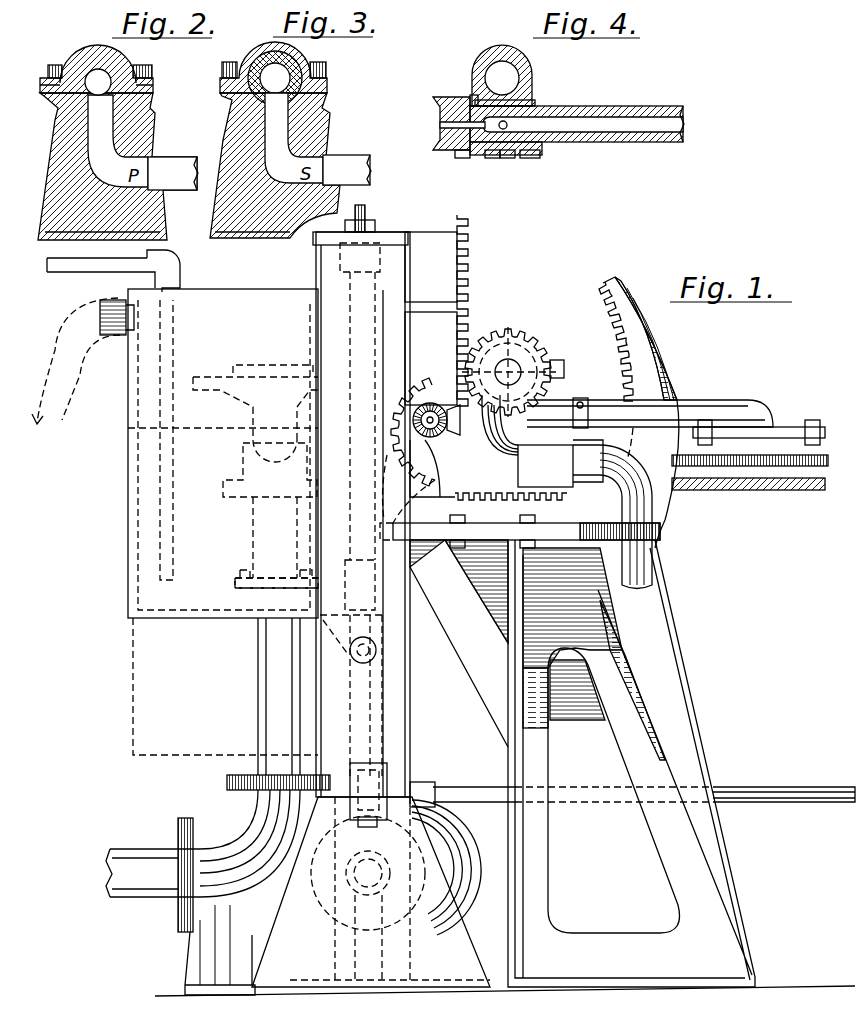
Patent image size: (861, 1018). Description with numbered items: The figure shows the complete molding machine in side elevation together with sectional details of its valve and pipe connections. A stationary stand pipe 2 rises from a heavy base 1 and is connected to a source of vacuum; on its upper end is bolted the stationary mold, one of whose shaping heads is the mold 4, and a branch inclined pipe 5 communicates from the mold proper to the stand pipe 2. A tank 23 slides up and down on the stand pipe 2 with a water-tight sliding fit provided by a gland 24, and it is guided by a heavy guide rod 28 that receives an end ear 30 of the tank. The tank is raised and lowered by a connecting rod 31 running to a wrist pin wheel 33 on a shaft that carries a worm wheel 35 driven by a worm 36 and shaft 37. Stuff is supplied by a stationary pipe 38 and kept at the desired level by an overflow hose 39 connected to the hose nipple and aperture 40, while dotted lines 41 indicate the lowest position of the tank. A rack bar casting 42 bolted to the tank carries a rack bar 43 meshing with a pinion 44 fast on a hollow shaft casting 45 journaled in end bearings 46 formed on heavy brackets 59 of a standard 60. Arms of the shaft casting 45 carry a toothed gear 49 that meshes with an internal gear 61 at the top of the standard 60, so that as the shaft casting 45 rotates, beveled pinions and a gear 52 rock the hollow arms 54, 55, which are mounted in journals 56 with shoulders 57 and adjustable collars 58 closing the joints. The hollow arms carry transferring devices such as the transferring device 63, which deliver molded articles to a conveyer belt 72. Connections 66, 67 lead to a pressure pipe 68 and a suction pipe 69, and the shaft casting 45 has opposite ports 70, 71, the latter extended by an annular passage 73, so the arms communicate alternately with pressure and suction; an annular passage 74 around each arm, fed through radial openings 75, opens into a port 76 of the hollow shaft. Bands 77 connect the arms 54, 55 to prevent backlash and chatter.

In FIG. 1, the base 1 is at (210, 962).
In FIG. 1, the stand pipe 2 is at (268, 672).
In FIG. 1, the mold 4 is at (232, 380).
In FIG. 1, the branch inclined pipe 5 is at (270, 432).
In FIG. 1, the tank 23 is at (128, 592).
In FIG. 1, the gland 24 is at (245, 598).
In FIG. 1, the guide rod 28 is at (355, 553).
In FIG. 1, the end ear 30 is at (372, 598).
In FIG. 1, the connecting rod 31 is at (385, 690).
In FIG. 1, the wrist pin wheel 33 is at (437, 858).
In FIG. 1, the worm wheel 35 is at (413, 907).
In FIG. 1, the worm 36 is at (373, 778).
In FIG. 1, the shaft 37 is at (790, 803).
In FIG. 1, the stationary pipe 38 is at (160, 475).
In FIG. 1, the overflow hose 39 is at (65, 393).
In FIG. 1, the hose nipple and aperture 40 is at (118, 318).
In FIG. 1, the dotted lines 41 is at (150, 428).
In FIG. 1, the rack bar casting 42 is at (435, 270).
In FIG. 1, the rack bar 43 is at (470, 285).
In FIG. 1, the pinion 44 is at (510, 332).
In FIG. 2, the shaft casting 45 is at (97, 62).
In FIG. 3, the shaft casting 45 is at (252, 104).
In FIG. 4, the shaft casting 45 is at (528, 71).
In FIG. 1, the shaft casting 45 is at (512, 368).
In FIG. 2, the end bearing 46 is at (76, 60).
In FIG. 1, the end bearing 46 is at (557, 362).
In FIG. 1, the toothed gear 49 is at (426, 398).
In FIG. 4, the gear 52 is at (445, 108).
In FIG. 4, the hollow arm 54 is at (656, 142).
In FIG. 1, the hollow arm 55 is at (722, 403).
In FIG. 4, the journal 56 is at (530, 158).
In FIG. 1, the journal 56 is at (507, 405).
In FIG. 4, the shoulder 57 is at (540, 152).
In FIG. 4, the adjustable collar 58 is at (462, 158).
In FIG. 1, the bracket 59 is at (528, 527).
In FIG. 1, the standard 60 is at (682, 696).
In FIG. 1, the internal gear 61 is at (650, 365).
In FIG. 1, the transferring device 63 is at (818, 467).
In FIG. 2, the connection 66 is at (118, 130).
In FIG. 3, the connection 67 is at (282, 128).
In FIG. 2, the pressure pipe 68 is at (173, 174).
In FIG. 1, the pressure pipe 68 is at (668, 550).
In FIG. 3, the suction pipe 69 is at (345, 165).
In FIG. 2, the port 70 is at (95, 106).
In FIG. 3, the port 71 is at (270, 62).
In FIG. 1, the conveyer belt 72 is at (787, 491).
In FIG. 3, the annular passage 73 is at (300, 58).
In FIG. 4, the annular passage 74 is at (494, 158).
In FIG. 4, the radial opening 75 is at (508, 158).
In FIG. 4, the port 76 is at (532, 96).
In FIG. 1, the band 77 is at (584, 398).